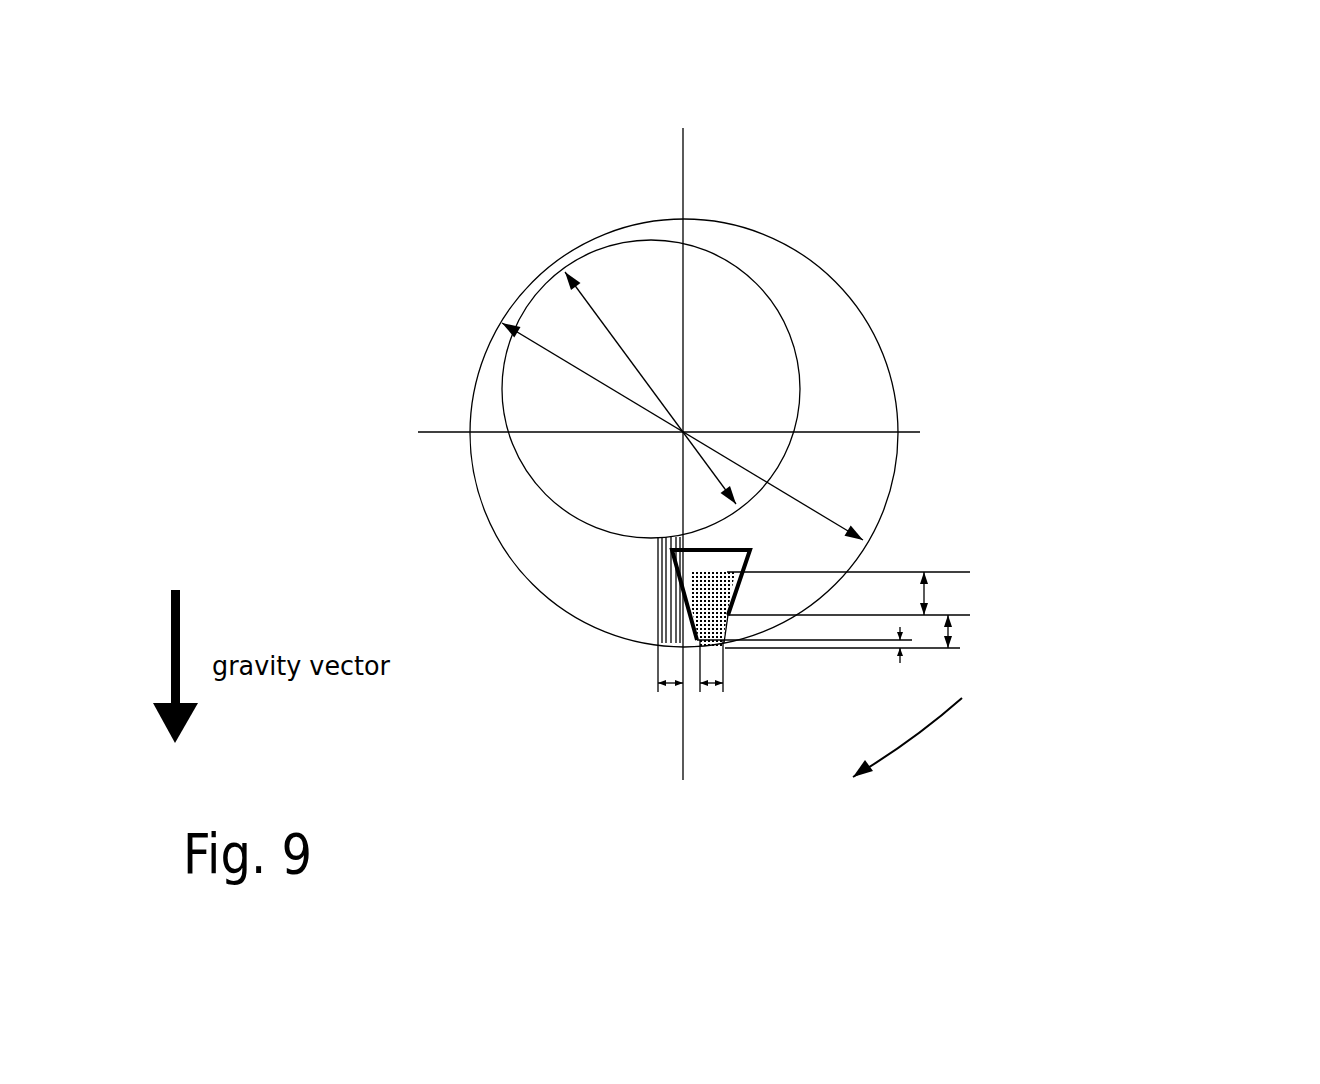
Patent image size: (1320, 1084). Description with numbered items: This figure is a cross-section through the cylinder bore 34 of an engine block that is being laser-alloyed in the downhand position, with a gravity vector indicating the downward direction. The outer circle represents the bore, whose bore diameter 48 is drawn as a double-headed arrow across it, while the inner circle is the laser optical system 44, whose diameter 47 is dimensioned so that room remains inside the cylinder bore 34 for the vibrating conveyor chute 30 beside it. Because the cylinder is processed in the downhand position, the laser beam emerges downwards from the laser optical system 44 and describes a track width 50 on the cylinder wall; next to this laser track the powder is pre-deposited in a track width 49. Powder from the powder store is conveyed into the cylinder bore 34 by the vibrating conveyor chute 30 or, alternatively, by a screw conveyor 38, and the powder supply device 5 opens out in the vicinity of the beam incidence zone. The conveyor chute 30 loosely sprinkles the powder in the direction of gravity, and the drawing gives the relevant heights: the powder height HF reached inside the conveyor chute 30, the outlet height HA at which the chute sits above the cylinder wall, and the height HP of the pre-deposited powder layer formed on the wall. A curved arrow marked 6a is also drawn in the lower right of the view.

The powder supply device 5 is at (693, 633).
The vibrating conveyor chute 30 is at (747, 547).
The cylinder bore 34 is at (733, 222).
The screw conveyor 38 is at (885, 343).
The laser optical system 44 is at (760, 305).
The diameter of the laser optical system 47 is at (590, 313).
The bore diameter 48 is at (573, 370).
The track width of pre-deposited powder 49 is at (690, 688).
The track width of the laser beam 50 is at (667, 686).
The powder height HF is at (925, 593).
The outlet height of the conveyor chute HA is at (948, 620).
The height of the pre-deposited powder layer HP is at (908, 642).
The viewing direction 6a is at (920, 740).